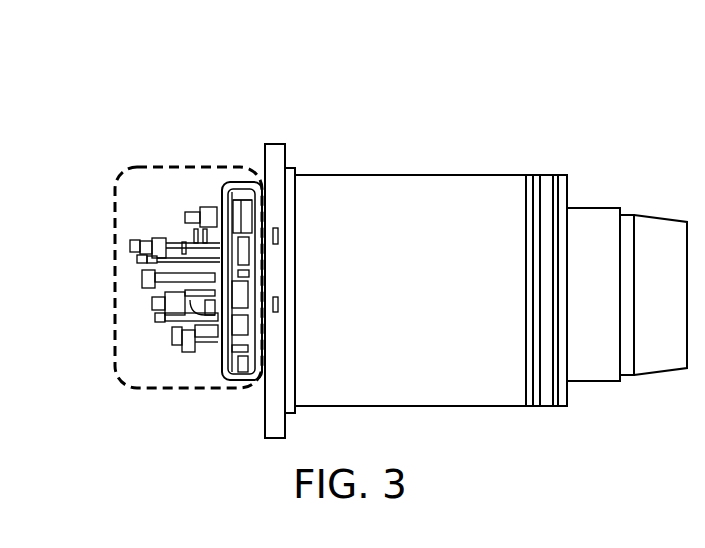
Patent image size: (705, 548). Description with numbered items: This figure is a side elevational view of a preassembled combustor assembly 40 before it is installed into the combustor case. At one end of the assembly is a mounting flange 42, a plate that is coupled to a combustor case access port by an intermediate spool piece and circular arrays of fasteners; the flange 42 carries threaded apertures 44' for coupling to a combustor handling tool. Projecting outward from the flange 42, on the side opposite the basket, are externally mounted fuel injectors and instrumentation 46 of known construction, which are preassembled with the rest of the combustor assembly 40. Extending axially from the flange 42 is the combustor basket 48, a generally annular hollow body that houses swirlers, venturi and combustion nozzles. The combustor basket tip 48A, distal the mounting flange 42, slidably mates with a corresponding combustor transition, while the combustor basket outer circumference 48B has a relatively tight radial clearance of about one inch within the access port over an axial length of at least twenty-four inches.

The combustor assembly 40 is at (160, 157).
The mounting flange 42 is at (278, 170).
The mounting slots 44' is at (374, 199).
The externally mounted fuel injectors and instrumentation 46 is at (80, 195).
The combustor basket 48 is at (493, 316).
The combustor basket tip 48A is at (670, 348).
The combustor basket outer circumference 48B is at (453, 406).